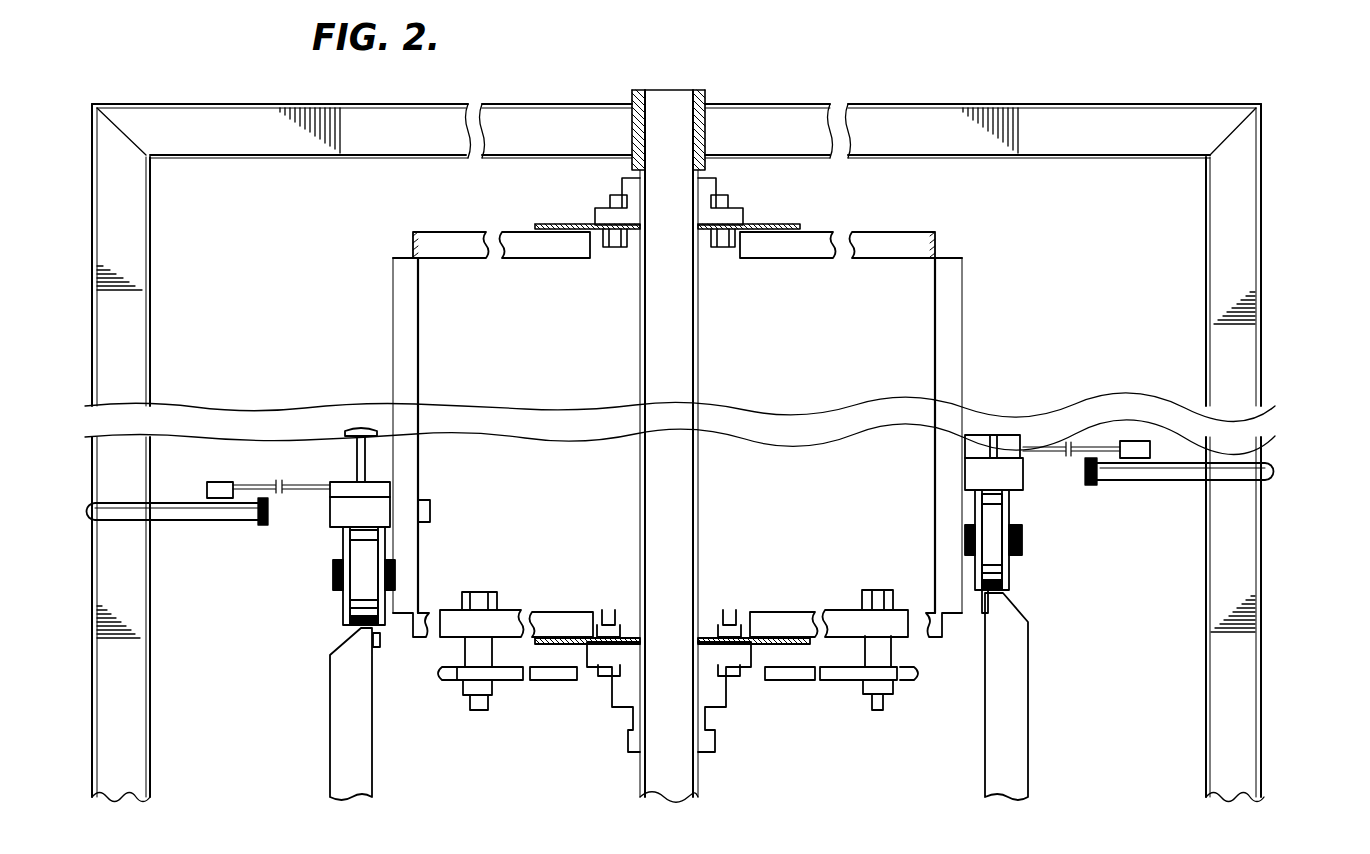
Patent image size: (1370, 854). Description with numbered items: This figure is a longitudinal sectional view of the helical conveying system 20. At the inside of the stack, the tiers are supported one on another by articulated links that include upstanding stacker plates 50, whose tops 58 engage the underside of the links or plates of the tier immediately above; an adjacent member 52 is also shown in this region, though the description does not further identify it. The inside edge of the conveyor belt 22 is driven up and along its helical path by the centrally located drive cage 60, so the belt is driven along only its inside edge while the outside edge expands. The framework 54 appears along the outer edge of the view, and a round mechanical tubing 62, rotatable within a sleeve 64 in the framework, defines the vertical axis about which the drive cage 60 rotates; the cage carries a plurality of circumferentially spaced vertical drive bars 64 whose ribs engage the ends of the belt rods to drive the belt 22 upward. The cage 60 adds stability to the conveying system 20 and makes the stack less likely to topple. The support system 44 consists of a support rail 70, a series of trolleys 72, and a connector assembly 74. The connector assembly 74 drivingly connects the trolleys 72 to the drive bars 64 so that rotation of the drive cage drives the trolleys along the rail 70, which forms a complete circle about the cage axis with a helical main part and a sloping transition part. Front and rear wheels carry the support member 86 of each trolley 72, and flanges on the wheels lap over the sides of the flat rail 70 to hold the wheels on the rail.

The conveying system 20 is at (1317, 220).
The conveyor belt 22 is at (249, 482).
The support system 44 is at (245, 551).
The stacker plates 50 is at (356, 457).
The rod 52 is at (177, 522).
The framework 54 is at (1262, 296).
The tops of the plates 58 is at (358, 430).
The drive cage 60 is at (579, 709).
The round mechanical tubing 62 is at (698, 376).
The sleeve / drive bars 64 is at (703, 96).
The support rail 70 is at (984, 607).
The trolleys 72 is at (1016, 481).
The connector assembly 74 is at (430, 512).
The support member 86 is at (340, 518).